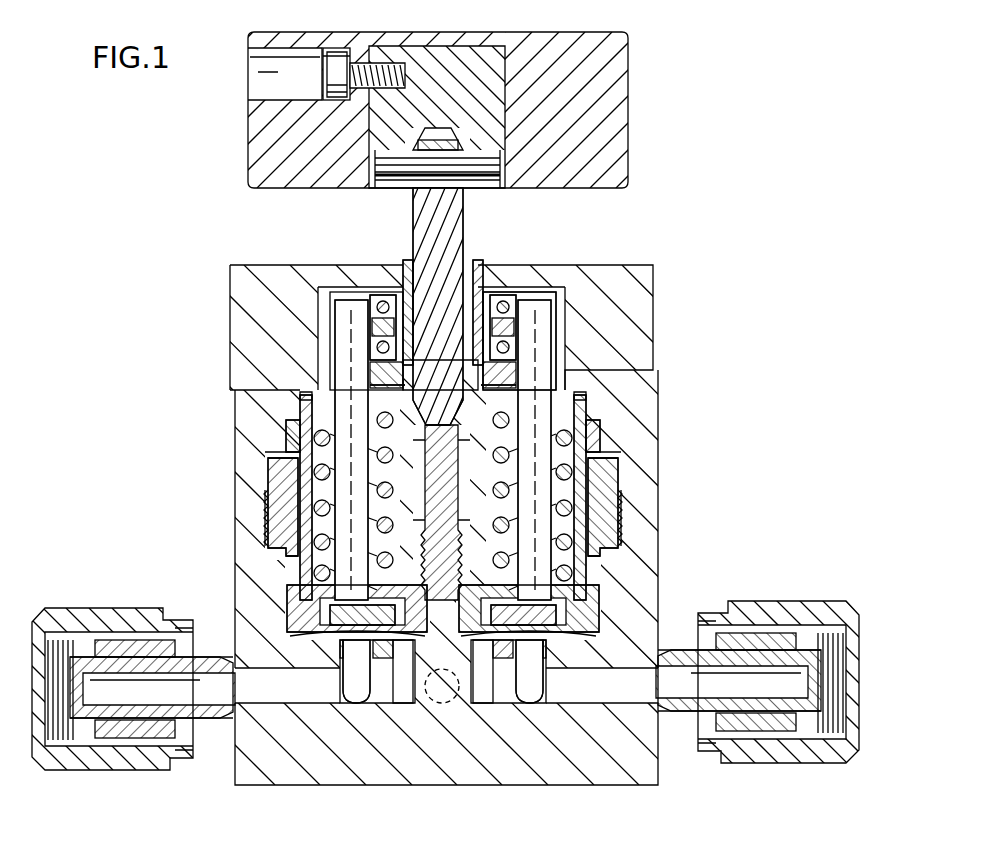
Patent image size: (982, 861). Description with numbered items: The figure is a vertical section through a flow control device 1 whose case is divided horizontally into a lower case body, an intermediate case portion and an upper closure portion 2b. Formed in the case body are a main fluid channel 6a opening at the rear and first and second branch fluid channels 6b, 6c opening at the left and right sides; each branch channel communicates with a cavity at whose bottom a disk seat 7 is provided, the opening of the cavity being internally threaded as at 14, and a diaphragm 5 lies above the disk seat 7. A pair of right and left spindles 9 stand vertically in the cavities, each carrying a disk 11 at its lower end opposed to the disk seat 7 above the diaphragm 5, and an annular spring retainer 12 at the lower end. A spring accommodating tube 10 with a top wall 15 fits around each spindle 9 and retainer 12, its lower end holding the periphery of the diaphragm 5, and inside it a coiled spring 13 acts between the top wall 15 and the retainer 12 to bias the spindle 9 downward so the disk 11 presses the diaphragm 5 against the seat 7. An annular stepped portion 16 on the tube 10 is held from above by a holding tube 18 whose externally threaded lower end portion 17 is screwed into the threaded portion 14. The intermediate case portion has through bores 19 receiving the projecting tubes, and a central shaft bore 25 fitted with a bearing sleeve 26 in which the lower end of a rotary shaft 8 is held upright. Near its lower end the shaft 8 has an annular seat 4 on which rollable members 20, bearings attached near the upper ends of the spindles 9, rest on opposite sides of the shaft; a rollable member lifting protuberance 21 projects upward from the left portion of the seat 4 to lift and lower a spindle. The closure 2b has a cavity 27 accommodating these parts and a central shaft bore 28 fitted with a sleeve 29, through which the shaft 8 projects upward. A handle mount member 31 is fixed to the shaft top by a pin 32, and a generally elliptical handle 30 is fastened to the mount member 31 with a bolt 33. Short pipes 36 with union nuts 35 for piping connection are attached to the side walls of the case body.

The flow control device 1 is at (684, 208).
The closure portion 2b is at (245, 590).
The annular seat 4 is at (560, 375).
The diaphragm 5 is at (300, 640).
The main fluid channel 6a is at (442, 703).
The first branch fluid channel 6b is at (308, 703).
The second branch fluid channel 6c is at (597, 703).
The disk seat 7 is at (358, 703).
The rotary shaft 8 is at (413, 218).
The spindle 9 is at (320, 330).
The spring accommodating tube 10 is at (300, 425).
The disk 11 is at (442, 671).
The annular spring retainer 12 is at (300, 612).
The coiled spring 13 is at (300, 455).
The internally threaded opening portion 14 is at (280, 535).
The top wall 15 is at (300, 400).
The annular stepped portion 16 is at (614, 585).
The externally threaded lower end portion 17 is at (275, 555).
The holding tube 18 is at (280, 492).
The through bore 19 is at (290, 470).
The rollable member 20 is at (378, 300).
The rollable member lifting protuberance 21 is at (335, 360).
The shaft bore 25 is at (418, 380).
The bearing sleeve 26 is at (415, 325).
The cavity 27 is at (562, 300).
The shaft bore 28 is at (407, 270).
The sleeve 29 is at (476, 270).
The handle 30 is at (618, 104).
The handle mount member 31 is at (480, 55).
The pin 32 is at (470, 180).
The bolt 33 is at (337, 52).
The union nut 35 is at (112, 770).
The short pipe 36 is at (190, 735).